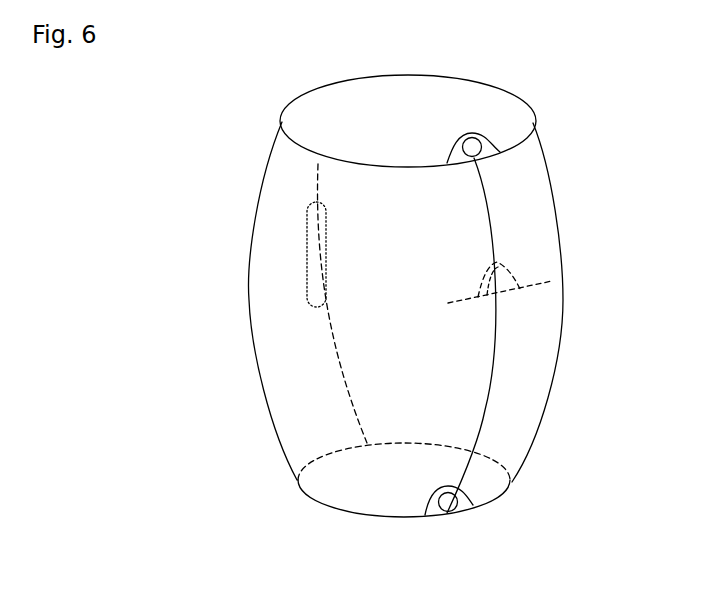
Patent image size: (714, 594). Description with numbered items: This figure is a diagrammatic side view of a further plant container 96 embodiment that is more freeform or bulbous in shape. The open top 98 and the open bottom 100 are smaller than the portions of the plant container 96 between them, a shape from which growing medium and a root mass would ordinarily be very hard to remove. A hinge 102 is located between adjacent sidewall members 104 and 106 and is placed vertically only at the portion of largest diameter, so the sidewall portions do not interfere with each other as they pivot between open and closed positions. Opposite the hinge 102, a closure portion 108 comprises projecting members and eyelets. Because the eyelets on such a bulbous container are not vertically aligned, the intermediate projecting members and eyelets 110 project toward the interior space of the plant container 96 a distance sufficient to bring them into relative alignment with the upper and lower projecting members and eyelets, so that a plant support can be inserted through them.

The plant container 96 is at (553, 75).
The open top 98 is at (382, 58).
The open bottom 100 is at (385, 527).
The hinge 102 is at (327, 268).
The sidewall member 104 is at (270, 332).
The sidewall member 106 is at (408, 107).
The closure portion 108 is at (503, 351).
The intermediate projecting members and eyelets 110 is at (527, 265).